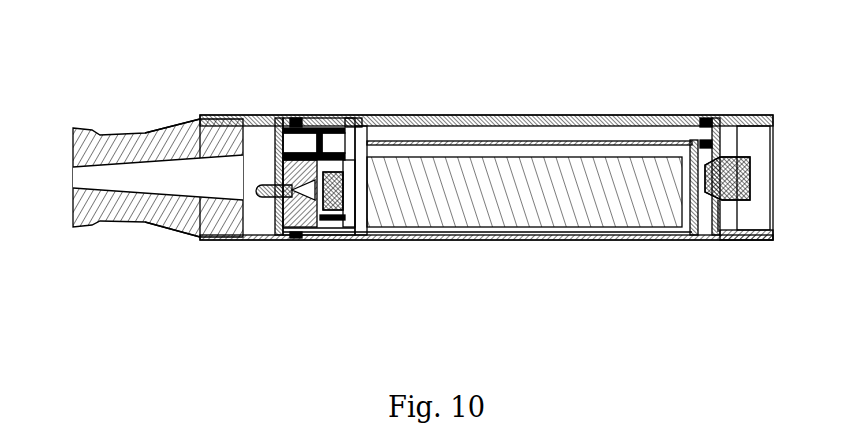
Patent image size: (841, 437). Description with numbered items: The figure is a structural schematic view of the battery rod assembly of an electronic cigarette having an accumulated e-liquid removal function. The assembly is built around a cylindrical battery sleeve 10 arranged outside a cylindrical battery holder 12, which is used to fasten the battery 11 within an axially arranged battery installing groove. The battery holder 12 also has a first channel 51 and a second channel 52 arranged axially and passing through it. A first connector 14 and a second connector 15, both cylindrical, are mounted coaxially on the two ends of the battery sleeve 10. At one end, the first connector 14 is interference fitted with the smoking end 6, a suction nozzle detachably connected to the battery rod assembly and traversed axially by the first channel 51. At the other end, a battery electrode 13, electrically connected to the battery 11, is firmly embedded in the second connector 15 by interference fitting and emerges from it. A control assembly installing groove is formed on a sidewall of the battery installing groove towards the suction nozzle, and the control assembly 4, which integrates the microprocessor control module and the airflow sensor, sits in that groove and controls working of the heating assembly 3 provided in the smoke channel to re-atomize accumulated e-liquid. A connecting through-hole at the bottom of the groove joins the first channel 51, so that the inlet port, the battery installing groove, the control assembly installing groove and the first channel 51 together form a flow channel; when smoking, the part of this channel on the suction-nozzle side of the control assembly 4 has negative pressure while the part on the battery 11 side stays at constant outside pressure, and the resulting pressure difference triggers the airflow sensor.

The heating assembly 3 is at (318, 128).
The control assembly 4 is at (323, 240).
The smoking end 6 is at (107, 225).
The battery sleeve 10 is at (410, 240).
The battery 11 is at (487, 222).
The battery holder 12 is at (402, 115).
The battery electrode 13 is at (718, 205).
The first connector 14 is at (215, 118).
The second connector 15 is at (748, 115).
The first channel 51 is at (148, 160).
The second channel 52 is at (520, 130).